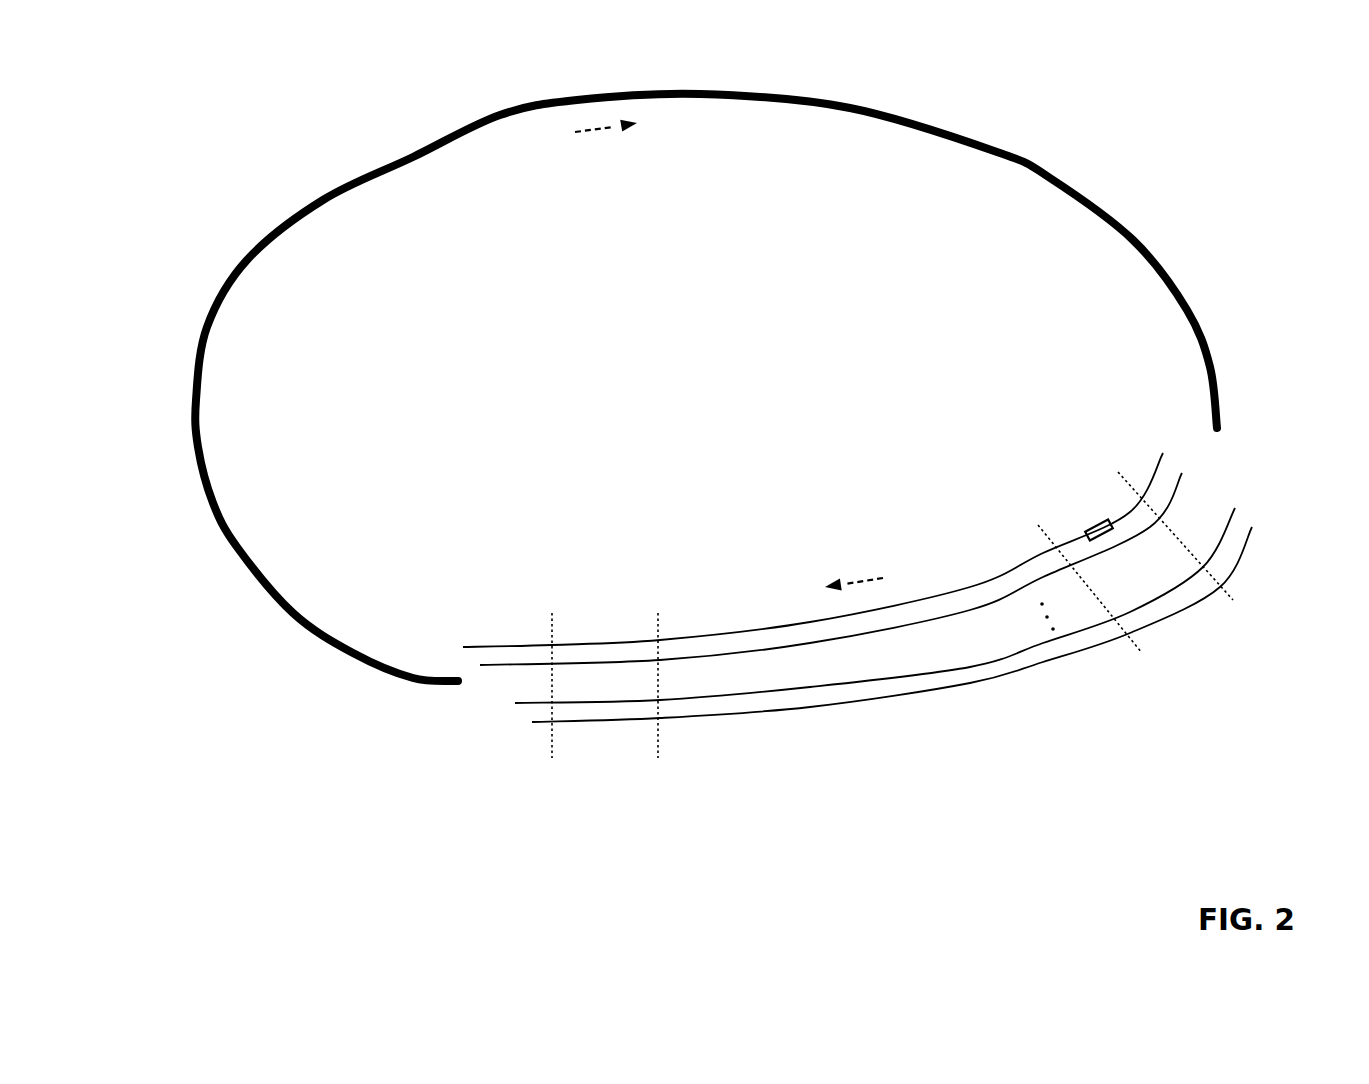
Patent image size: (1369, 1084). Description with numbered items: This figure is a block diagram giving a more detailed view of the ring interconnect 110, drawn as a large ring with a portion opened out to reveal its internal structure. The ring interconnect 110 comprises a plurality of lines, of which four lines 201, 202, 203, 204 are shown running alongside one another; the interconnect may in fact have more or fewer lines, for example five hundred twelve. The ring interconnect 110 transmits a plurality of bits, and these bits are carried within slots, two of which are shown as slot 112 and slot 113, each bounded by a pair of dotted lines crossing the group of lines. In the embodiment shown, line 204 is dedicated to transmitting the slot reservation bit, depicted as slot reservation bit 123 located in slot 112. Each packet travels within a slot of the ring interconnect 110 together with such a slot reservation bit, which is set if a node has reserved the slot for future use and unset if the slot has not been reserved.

The ring interconnect 110 is at (983, 773).
The slot 112 is at (1135, 570).
The slot 113 is at (605, 701).
The slot reservation bit 123 is at (1088, 498).
The line 201 is at (915, 619).
The line 202 is at (889, 589).
The line 203 is at (848, 551).
The line 204 is at (817, 532).